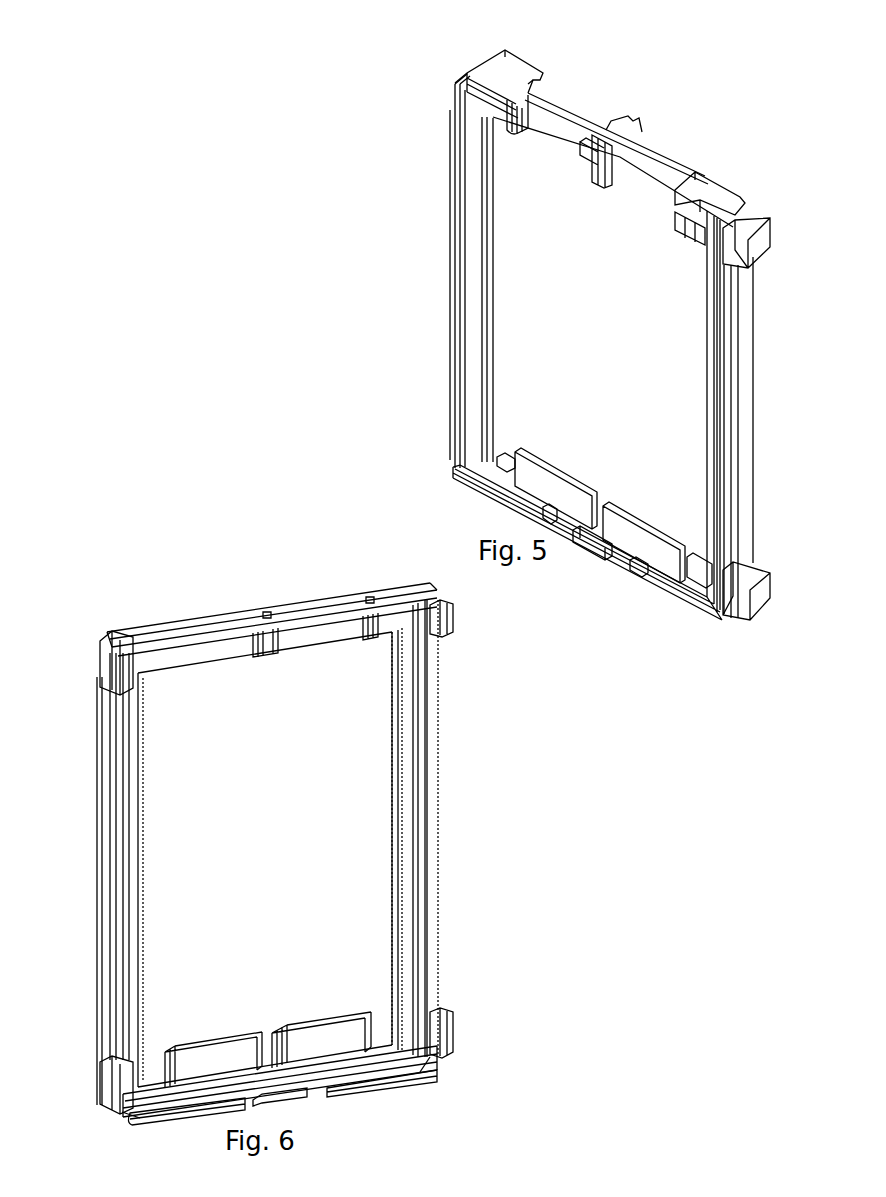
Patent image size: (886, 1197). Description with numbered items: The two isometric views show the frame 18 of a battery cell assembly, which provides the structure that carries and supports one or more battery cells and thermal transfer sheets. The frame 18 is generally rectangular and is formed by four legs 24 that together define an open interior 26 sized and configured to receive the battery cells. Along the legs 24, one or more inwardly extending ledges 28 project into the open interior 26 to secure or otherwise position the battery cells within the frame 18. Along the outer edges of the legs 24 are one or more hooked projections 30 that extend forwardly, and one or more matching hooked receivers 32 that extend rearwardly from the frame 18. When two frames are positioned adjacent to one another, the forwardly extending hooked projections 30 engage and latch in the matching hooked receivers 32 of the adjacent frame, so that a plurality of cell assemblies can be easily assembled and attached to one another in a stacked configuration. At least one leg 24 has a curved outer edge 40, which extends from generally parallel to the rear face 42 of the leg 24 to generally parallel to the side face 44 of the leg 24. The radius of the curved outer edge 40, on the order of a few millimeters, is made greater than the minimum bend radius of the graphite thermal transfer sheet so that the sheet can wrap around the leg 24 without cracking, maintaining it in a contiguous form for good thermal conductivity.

In FIG. 5, the frame 18 is at (428, 122).
In FIG. 6, the frame 18 is at (506, 858).
In FIG. 5, the legs 24 is at (573, 100).
In FIG. 6, the legs 24 is at (233, 617).
In FIG. 5, the open interior 26 is at (611, 354).
In FIG. 6, the open interior 26 is at (280, 859).
In FIG. 5, the inwardly extending ledges 28 is at (490, 318).
In FIG. 6, the inwardly extending ledges 28 is at (380, 627).
In FIG. 5, the hooked projections 30 is at (518, 63).
In FIG. 5, the hooked receivers 32 is at (488, 100).
In FIG. 5, the curved outer edge 40 is at (730, 452).
In FIG. 5, the rear face 42 is at (720, 512).
In FIG. 5, the side face 44 is at (745, 420).
In FIG. 6, the side face 44 is at (100, 780).